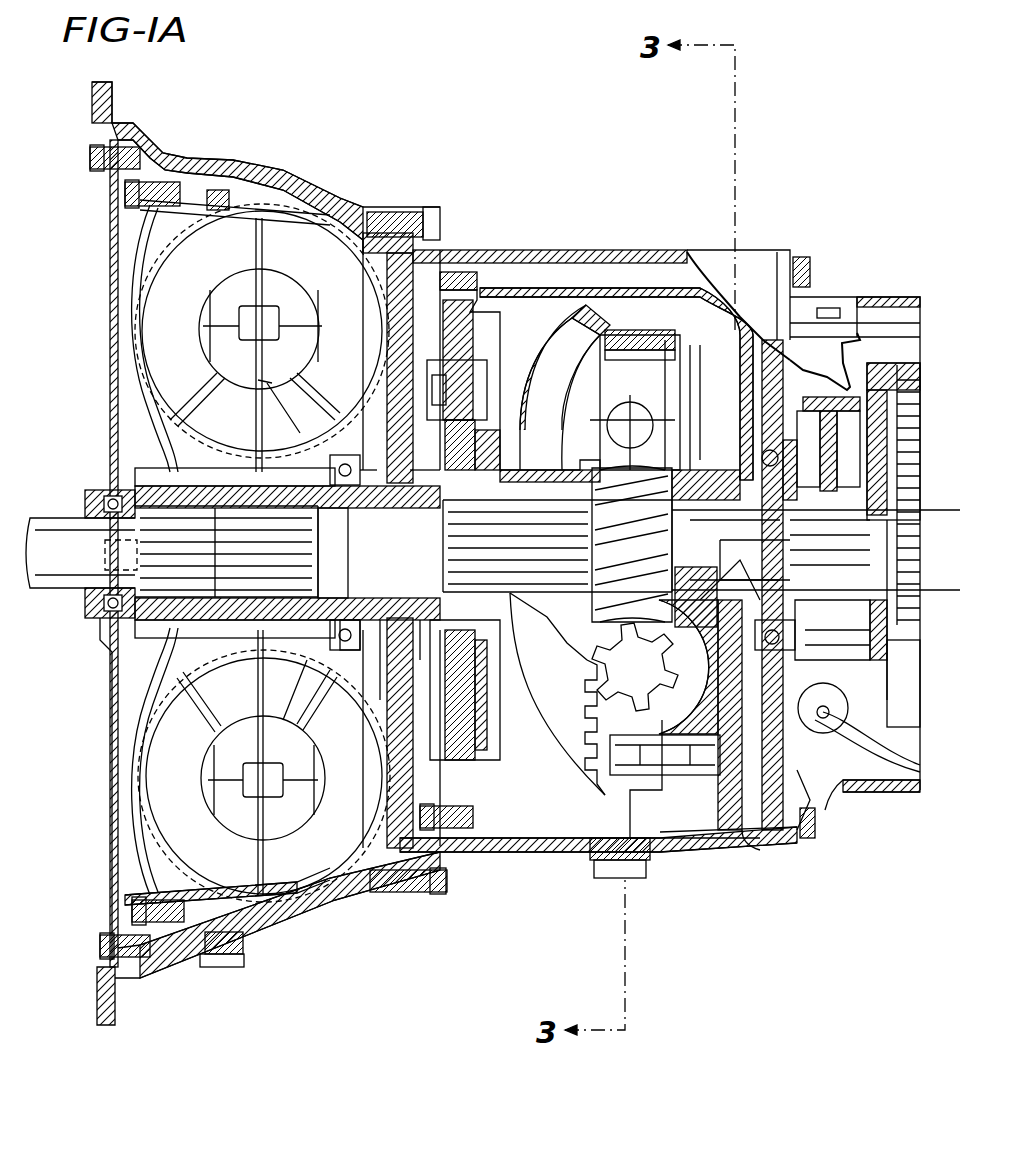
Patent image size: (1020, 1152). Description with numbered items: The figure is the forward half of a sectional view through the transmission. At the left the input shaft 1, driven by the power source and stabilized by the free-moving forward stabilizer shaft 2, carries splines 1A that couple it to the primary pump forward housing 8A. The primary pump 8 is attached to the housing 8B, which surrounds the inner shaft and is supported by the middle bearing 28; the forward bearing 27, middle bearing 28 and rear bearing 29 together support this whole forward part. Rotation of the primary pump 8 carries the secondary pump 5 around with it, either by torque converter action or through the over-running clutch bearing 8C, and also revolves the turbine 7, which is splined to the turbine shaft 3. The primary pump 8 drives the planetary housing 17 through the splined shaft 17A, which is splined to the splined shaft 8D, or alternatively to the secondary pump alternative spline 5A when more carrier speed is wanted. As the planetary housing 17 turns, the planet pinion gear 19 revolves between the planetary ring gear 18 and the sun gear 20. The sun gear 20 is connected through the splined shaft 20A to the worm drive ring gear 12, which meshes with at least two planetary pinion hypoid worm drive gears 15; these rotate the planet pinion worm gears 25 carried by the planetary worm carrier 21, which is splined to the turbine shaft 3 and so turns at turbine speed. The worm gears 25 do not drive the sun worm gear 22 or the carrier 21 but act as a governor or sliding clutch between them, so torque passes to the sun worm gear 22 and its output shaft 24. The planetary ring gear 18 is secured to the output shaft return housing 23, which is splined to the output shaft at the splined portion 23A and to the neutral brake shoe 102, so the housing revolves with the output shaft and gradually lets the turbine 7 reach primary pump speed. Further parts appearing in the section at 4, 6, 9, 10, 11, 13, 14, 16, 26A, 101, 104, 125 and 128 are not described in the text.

The input shaft 1 is at (55, 525).
The splines 1A is at (186, 525).
The forward stabilizer shaft 2 is at (103, 555).
The turbine shaft 3 is at (353, 562).
The wheel vane 4 is at (281, 687).
The secondary pump 5 is at (321, 704).
The secondary pump alternative spline 5A is at (333, 553).
The wheel vane 6 is at (229, 709).
The turbine 7 is at (169, 779).
The primary pump 8 is at (358, 788).
The primary pump forward housing 8A is at (132, 870).
The housing 8B is at (365, 845).
The over-running clutch bearing 8C is at (348, 618).
The splined shaft 8D is at (420, 618).
The bolt 9 is at (230, 968).
The sleeve 10 is at (392, 618).
The housing bottom wall 11 is at (552, 858).
The worm drive ring gear 12 is at (552, 721).
The pin 13 is at (587, 810).
The bolt 14 is at (650, 860).
The planetary pinion hypoid worm drive gears 15 is at (643, 684).
The bracket 16 is at (752, 778).
The planetary housing 17 is at (455, 375).
The splined shaft 17A is at (372, 500).
The planetary ring gear 18 is at (470, 324).
The planet pinion gear 19 is at (470, 770).
The sun gear 20 is at (455, 438).
The splined shaft 20A is at (550, 465).
The planetary worm carrier 21 is at (650, 328).
The sun worm gear 22 is at (625, 505).
The output shaft return housing 23 is at (636, 298).
The splined portion 23A is at (792, 540).
The output shaft 24 is at (707, 528).
The planet pinion worm gears 25 is at (566, 405).
The clutch ring 26A is at (548, 465).
The forward bearing 27 is at (105, 640).
The middle bearing 28 is at (408, 498).
The rear bearing 29 is at (772, 628).
The end housing 101 is at (832, 395).
The neutral brake shoe 102 is at (805, 405).
The gear 104 is at (905, 395).
The lever 125 is at (830, 748).
The end cap 128 is at (897, 722).